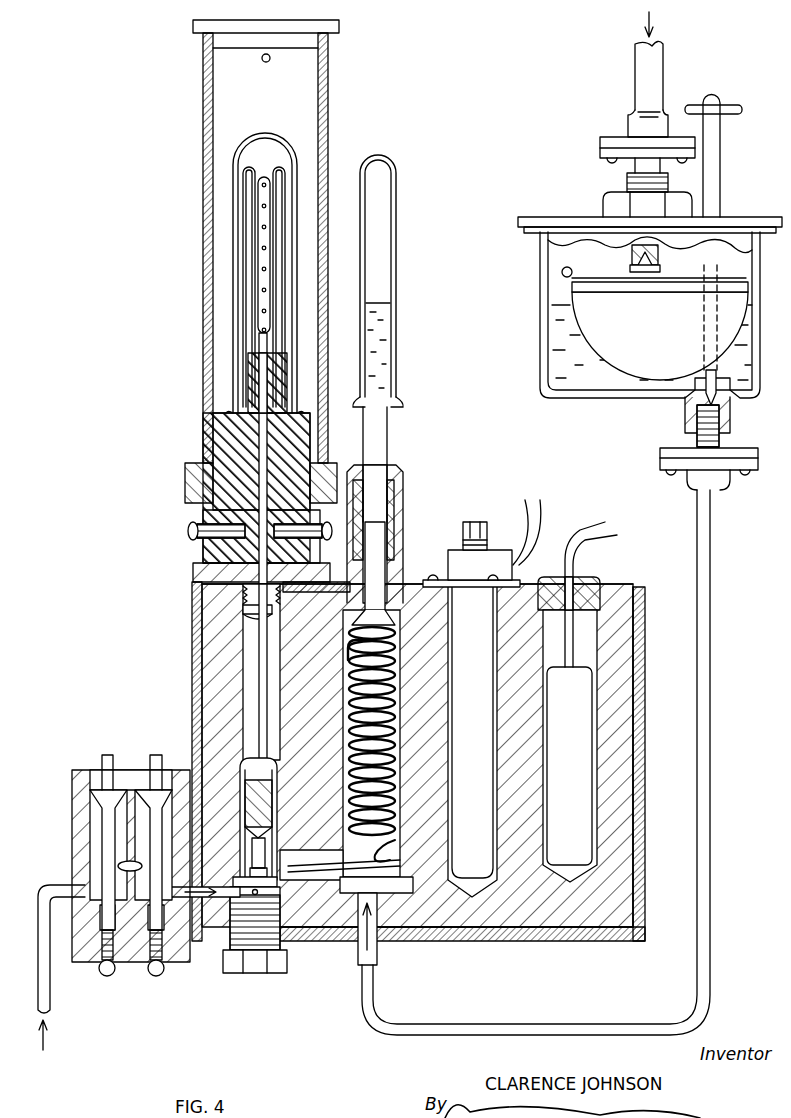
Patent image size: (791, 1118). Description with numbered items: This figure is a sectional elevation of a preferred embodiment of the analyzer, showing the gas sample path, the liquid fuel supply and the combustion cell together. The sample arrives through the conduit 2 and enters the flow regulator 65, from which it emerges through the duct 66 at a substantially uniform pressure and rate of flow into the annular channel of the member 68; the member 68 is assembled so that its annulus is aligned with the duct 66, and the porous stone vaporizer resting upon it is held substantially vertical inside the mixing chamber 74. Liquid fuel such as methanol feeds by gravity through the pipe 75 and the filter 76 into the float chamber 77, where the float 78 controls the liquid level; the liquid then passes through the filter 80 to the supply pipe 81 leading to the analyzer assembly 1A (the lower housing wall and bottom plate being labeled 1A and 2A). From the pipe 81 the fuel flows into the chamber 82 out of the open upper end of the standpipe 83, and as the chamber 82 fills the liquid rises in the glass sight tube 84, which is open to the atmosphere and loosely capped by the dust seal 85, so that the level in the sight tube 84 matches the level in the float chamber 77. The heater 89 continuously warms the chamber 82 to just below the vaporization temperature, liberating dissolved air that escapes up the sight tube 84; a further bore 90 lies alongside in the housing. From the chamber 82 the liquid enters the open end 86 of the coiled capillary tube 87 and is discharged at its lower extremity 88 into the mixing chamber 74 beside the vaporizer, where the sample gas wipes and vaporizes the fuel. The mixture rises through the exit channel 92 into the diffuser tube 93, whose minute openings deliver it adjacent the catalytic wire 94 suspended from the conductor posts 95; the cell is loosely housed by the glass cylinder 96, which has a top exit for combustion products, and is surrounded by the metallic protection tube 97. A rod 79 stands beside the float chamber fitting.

The conduit 2 is at (55, 884).
The analyzer assembly 1A is at (645, 872).
The bottom plate 2A is at (645, 926).
The flow regulator 65 is at (72, 812).
The duct 66 is at (172, 900).
The member 68 is at (262, 975).
The mixing chamber 74 is at (283, 777).
The pipe 75 is at (634, 62).
The filter 76 is at (600, 152).
The float chamber 77 is at (540, 347).
The float 78 is at (655, 325).
The rod 79 is at (720, 172).
The filter 80 is at (660, 465).
The supply pipe 81 is at (715, 605).
The chamber 82 is at (403, 697).
The standpipe 83 is at (385, 625).
The glass sight tube 84 is at (392, 443).
The dust seal 85 is at (398, 240).
The open end 86 is at (348, 648).
The coiled tube 87 is at (395, 750).
The lower extremity 88 is at (290, 865).
The heater 89 is at (577, 702).
The bore 90 is at (482, 698).
The exit channel 92 is at (268, 700).
The diffuser tube 93 is at (252, 342).
The catalytic wire 94 is at (258, 185).
The conductor posts 95 is at (243, 246).
The glass cylinder 96 is at (277, 132).
The metallic protection tube 97 is at (326, 82).